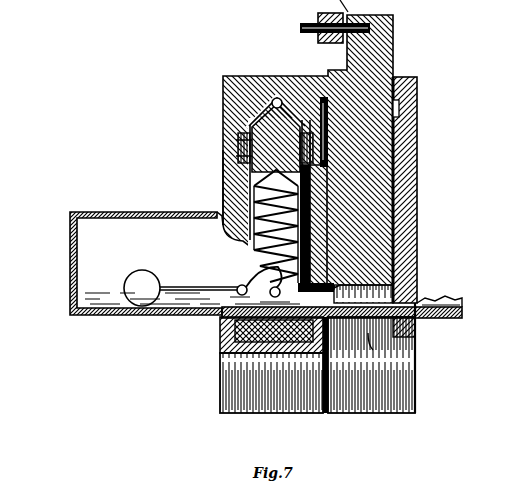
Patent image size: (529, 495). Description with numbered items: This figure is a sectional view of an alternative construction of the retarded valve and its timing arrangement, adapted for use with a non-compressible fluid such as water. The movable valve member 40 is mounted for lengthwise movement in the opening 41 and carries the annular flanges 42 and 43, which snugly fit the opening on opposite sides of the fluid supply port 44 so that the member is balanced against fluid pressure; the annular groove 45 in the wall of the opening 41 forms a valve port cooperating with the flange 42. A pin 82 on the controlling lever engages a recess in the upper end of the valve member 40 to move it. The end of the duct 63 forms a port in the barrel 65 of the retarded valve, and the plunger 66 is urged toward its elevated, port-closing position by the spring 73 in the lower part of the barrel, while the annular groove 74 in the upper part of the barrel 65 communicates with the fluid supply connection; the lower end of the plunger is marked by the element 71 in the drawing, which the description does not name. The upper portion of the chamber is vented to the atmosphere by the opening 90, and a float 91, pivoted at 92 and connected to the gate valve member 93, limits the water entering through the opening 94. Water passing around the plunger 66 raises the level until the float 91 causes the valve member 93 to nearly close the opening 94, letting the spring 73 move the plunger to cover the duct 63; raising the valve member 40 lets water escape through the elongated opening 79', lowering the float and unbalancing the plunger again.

The movable valve member 40 is at (396, 48).
The opening 41 is at (373, 350).
The annular flange 42 is at (399, 100).
The annular flange 43 is at (417, 212).
The fluid supply port 44 is at (300, 130).
The annular groove 45 is at (318, 97).
The duct 63 is at (273, 97).
The barrel 65 is at (223, 182).
The plunger 66 is at (265, 134).
The plunger tip 71 is at (304, 287).
The spring 73 is at (258, 249).
The annular groove 74 is at (237, 153).
The elongated opening 79' is at (342, 293).
The pin 82 is at (300, 27).
The opening 90 is at (187, 213).
The float 91 is at (133, 275).
The pivot 92 is at (236, 284).
The gate valve member 93 is at (268, 267).
The opening 94 is at (220, 330).